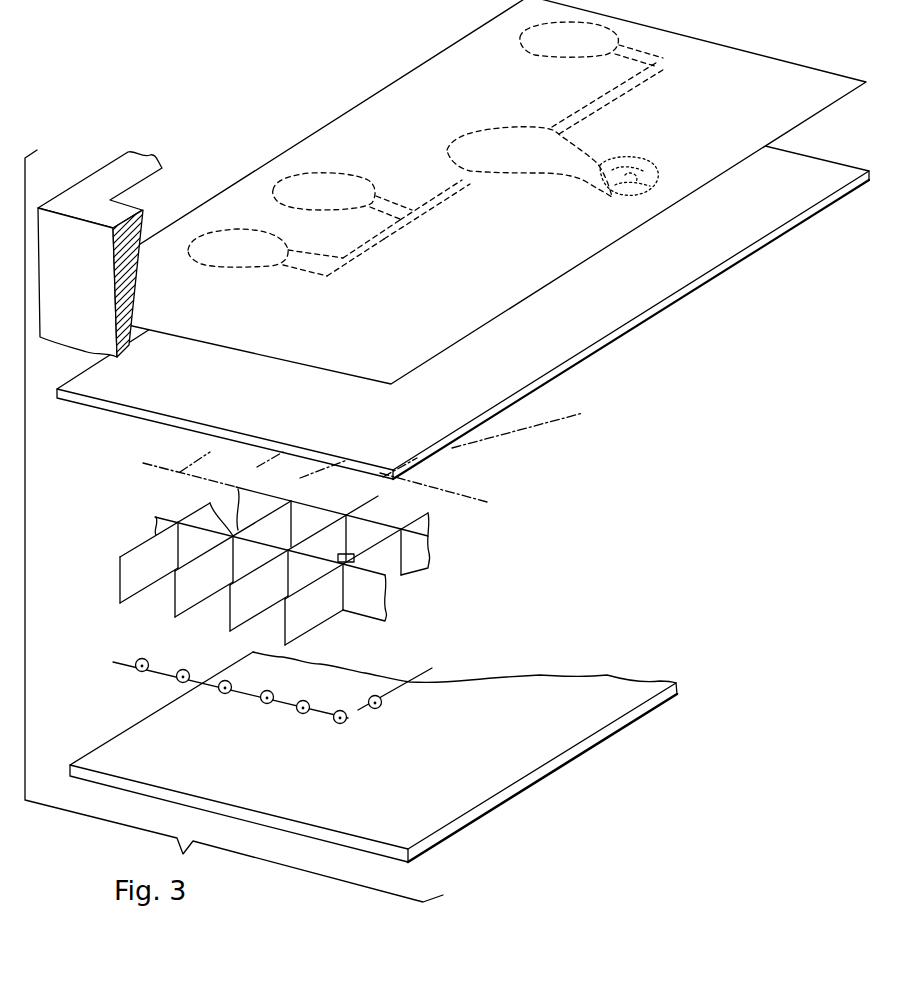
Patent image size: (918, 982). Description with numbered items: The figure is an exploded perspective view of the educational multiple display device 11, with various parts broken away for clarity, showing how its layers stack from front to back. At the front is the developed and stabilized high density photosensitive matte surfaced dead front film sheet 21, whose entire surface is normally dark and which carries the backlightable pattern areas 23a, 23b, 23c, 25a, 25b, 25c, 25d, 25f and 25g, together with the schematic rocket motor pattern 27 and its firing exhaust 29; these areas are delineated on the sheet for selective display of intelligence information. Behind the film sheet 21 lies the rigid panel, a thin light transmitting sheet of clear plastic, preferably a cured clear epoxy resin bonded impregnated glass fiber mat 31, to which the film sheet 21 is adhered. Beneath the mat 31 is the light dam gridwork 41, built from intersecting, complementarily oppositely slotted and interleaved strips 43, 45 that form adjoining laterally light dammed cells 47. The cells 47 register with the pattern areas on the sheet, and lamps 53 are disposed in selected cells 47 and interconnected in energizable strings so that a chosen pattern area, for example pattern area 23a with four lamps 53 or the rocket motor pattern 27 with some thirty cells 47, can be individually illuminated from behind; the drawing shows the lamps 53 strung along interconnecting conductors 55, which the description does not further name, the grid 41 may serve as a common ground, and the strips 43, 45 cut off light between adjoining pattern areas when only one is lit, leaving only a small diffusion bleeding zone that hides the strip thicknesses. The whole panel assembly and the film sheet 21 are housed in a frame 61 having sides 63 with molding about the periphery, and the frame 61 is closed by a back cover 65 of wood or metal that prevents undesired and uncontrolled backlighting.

The educational multiple display device 11 is at (320, 103).
The dead front film sheet 21 is at (426, 80).
The backlightable pattern area 23a is at (215, 262).
The backlightable pattern area 23b is at (378, 171).
The backlightable pattern area 23c is at (533, 48).
The backlightable pattern area 25a is at (292, 272).
The backlightable pattern area 25b is at (388, 212).
The backlightable pattern area 25c is at (652, 58).
The backlightable pattern area 25d is at (348, 260).
The backlightable pattern area 25f is at (455, 190).
The backlightable pattern area 25g is at (636, 82).
The schematic rocket motor pattern 27 is at (553, 168).
The firing exhaust pattern area 29 is at (643, 170).
The glass fiber mat 31 is at (494, 380).
The light dam gridwork 41 is at (353, 529).
The slotted strip 43 is at (143, 570).
The slotted strip 45 is at (416, 566).
The light dammed cell 47 is at (307, 492).
The lamp 53 is at (233, 690).
The conductor wire 55 is at (207, 685).
The frame 61 is at (100, 239).
The side 63 is at (78, 193).
The back cover 65 is at (480, 780).